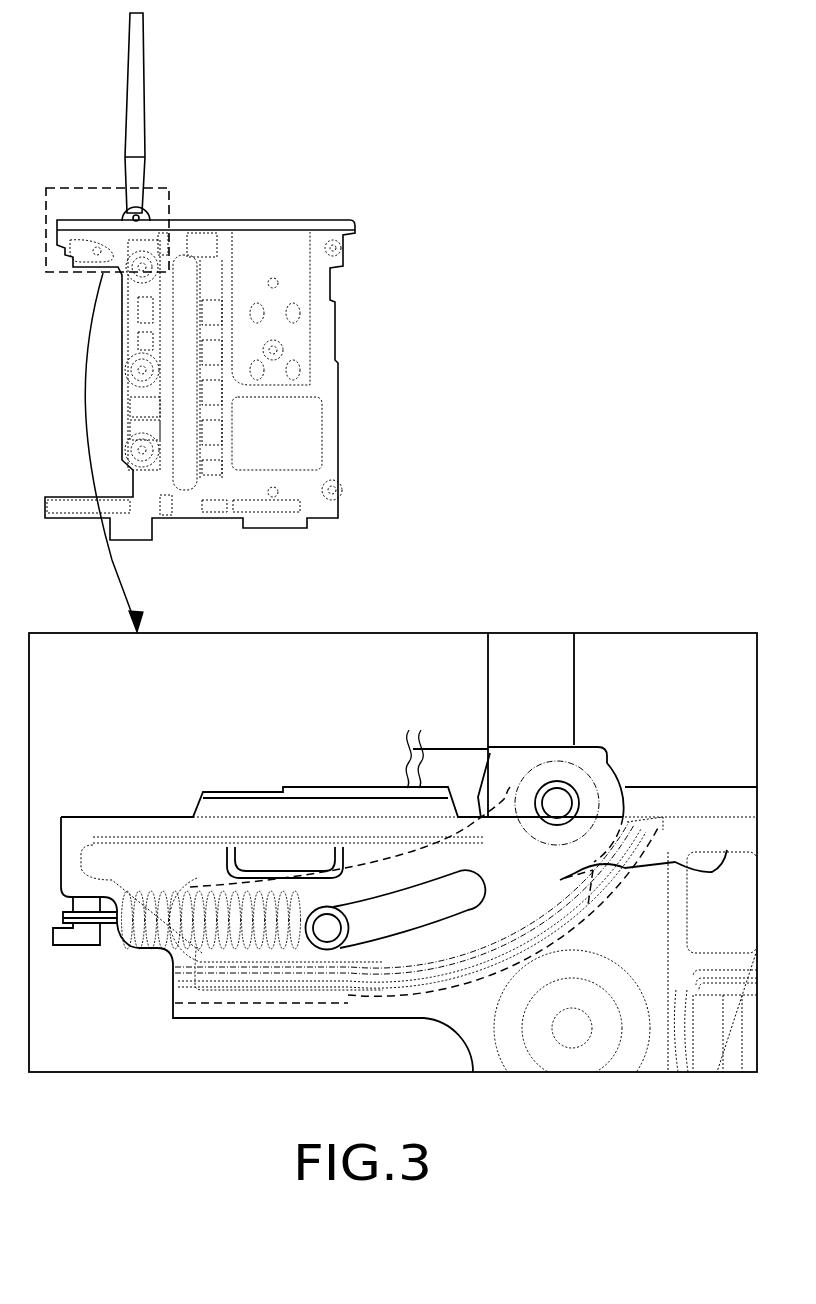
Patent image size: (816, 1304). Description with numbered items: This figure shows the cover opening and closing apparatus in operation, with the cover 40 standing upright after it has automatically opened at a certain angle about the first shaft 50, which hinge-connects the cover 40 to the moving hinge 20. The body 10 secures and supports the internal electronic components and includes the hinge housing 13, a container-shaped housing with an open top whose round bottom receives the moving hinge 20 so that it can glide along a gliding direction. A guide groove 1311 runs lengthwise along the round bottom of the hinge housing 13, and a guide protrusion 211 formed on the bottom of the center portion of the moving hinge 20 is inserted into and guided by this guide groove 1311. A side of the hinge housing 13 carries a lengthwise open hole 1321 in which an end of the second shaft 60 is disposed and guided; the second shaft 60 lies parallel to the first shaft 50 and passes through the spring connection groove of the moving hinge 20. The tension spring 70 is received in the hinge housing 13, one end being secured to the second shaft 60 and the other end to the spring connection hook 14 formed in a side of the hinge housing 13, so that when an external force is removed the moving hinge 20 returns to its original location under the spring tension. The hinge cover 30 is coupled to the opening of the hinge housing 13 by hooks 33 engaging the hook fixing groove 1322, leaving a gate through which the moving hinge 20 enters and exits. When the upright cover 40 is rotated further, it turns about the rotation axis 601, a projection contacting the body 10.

The body 10 is at (200, 1020).
The hinge housing 13 is at (150, 862).
The spring connection hook 14 is at (85, 938).
The moving hinge 20 is at (613, 767).
The hinge cover 30 is at (245, 793).
The hooks 33 is at (298, 857).
The cover 40 is at (578, 675).
The first shaft 50 is at (557, 803).
The second shaft 60 is at (318, 947).
The tension spring 70 is at (138, 948).
The guide protrusion 211 is at (727, 850).
The rotation axis 601 is at (485, 755).
The guide groove 1311 is at (428, 990).
The open hole 1321 is at (407, 893).
The hook fixing groove 1322 is at (222, 862).